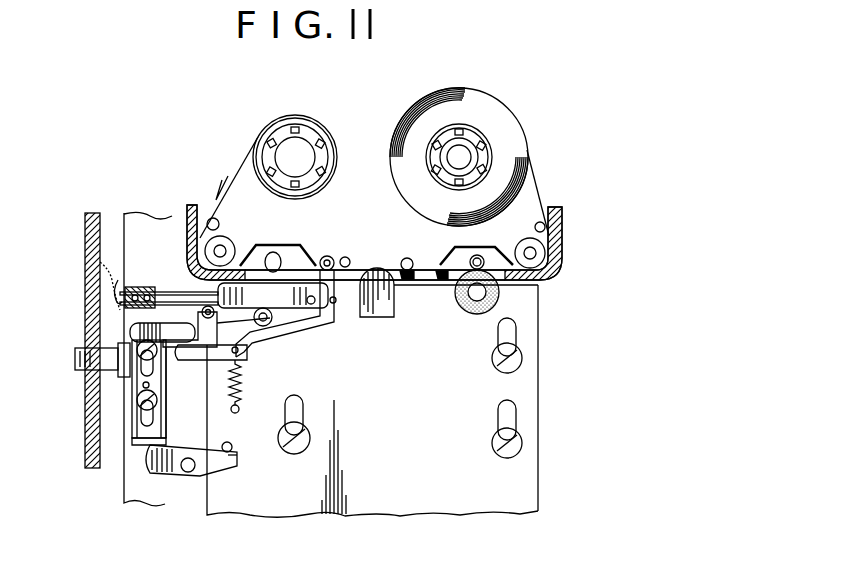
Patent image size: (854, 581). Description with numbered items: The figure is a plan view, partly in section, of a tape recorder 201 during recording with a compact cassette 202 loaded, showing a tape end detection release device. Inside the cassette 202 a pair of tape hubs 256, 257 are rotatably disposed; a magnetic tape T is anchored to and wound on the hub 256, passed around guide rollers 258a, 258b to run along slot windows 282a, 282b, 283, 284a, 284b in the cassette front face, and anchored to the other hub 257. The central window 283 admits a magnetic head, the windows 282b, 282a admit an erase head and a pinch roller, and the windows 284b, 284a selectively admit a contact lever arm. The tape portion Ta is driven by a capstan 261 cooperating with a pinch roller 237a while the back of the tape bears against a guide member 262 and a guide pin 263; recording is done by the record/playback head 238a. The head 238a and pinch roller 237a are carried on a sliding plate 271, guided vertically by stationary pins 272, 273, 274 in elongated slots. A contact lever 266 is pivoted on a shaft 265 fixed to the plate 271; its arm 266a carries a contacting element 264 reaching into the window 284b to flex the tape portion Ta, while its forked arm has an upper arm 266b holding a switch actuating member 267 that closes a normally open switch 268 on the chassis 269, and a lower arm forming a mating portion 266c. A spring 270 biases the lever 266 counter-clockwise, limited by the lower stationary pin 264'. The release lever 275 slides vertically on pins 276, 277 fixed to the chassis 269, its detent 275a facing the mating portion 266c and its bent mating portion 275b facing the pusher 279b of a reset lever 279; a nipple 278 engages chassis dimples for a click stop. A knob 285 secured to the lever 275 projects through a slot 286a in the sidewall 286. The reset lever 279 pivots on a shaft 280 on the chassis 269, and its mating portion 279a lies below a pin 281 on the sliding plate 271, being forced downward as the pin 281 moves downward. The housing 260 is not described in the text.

The tape recorder 201 is at (141, 168).
The compact cassette 202 is at (375, 109).
The tape hub 256 is at (472, 126).
The tape hub 257 is at (300, 128).
The capstan 261 is at (452, 228).
The magnetic tape T is at (538, 174).
The tape portion Ta is at (432, 281).
The cassette housing 260 is at (562, 226).
The guide member 262 is at (228, 244).
The guide roller 258a is at (547, 258).
The guide roller 258b is at (207, 234).
The slot window 282a is at (500, 263).
The slot window 282b is at (293, 254).
The central window 283 is at (399, 259).
The slot window 284a is at (424, 258).
The slot window 284b is at (334, 256).
The guide pin 263 is at (350, 258).
The contacting element 264 is at (316, 249).
The stationary pin 264' is at (304, 332).
The shaft 265 is at (258, 333).
The contact lever 266 is at (300, 330).
The arm 266a is at (336, 288).
The upper arm 266b is at (200, 296).
The mating portion 266c is at (190, 348).
The switch actuating member 267 is at (228, 301).
The switch 268 is at (150, 290).
The chassis 269 is at (85, 223).
The spring 270 is at (240, 405).
The sliding plate 271 is at (540, 339).
The stationary pin 272 is at (297, 454).
The stationary pin 273 is at (495, 440).
The stationary pin 274 is at (496, 370).
The release lever 275 is at (128, 331).
The detent 275a is at (213, 349).
The mating portion 275b is at (135, 440).
The pin 276 is at (140, 354).
The pin 277 is at (140, 400).
The nipple 278 is at (150, 388).
The reset lever 279 is at (215, 473).
The mating portion 279a is at (244, 459).
The pusher 279b is at (165, 446).
The shaft 280 is at (183, 471).
The pin 281 is at (229, 442).
The knob 285 is at (75, 359).
The sidewall 286 is at (100, 262).
The slot 286a is at (118, 356).
The pinch roller 237a is at (472, 314).
The record/playback head 238a is at (392, 317).